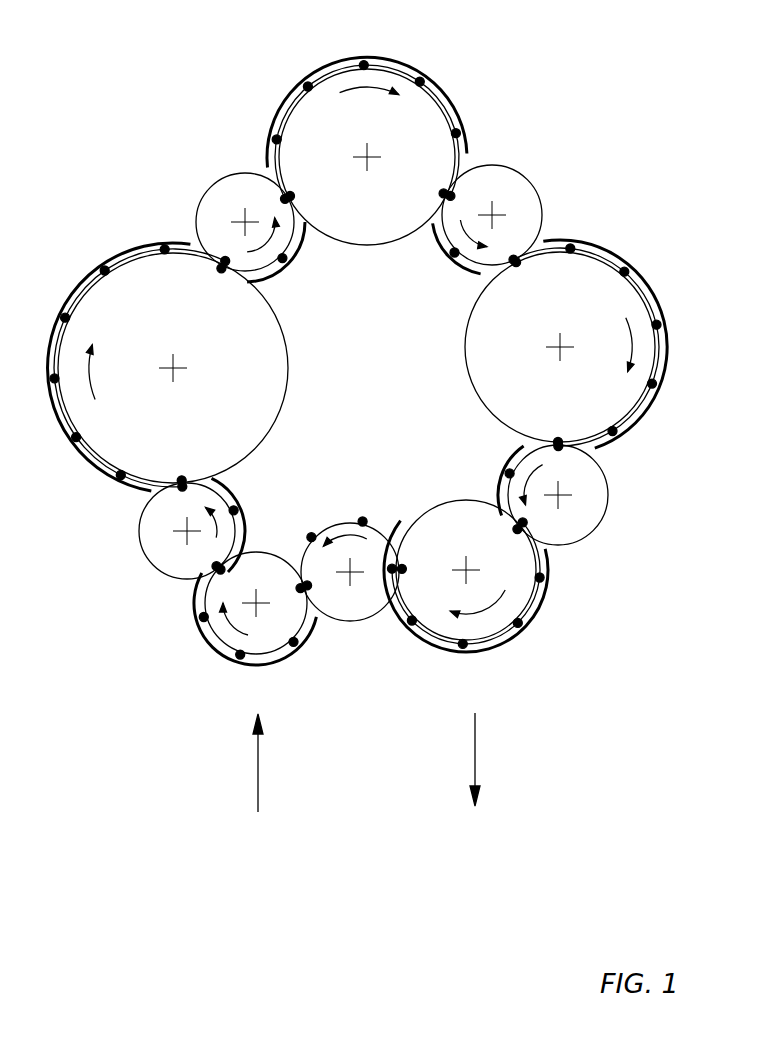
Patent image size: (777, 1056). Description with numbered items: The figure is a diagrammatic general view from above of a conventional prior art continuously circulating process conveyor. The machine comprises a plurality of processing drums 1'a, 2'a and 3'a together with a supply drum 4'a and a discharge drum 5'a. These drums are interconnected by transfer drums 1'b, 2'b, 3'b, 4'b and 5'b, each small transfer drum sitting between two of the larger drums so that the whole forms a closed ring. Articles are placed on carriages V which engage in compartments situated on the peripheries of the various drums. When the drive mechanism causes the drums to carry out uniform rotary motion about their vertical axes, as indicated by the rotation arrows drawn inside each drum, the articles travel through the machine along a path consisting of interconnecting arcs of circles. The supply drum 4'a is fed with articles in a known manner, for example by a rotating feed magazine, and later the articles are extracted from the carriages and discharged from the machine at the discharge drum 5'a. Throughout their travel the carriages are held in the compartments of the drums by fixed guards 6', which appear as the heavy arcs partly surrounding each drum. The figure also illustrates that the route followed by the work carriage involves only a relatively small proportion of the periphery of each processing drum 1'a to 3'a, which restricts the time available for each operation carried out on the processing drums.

The processing drum 1'a is at (169, 368).
The processing drum 2'a is at (366, 153).
The processing drum 3'a is at (563, 347).
The supply drum 4'a is at (255, 605).
The discharge drum 5'a is at (466, 574).
The transfer drum 1'b is at (188, 527).
The transfer drum 2'b is at (245, 223).
The transfer drum 3'b is at (490, 216).
The transfer drum 4'b is at (556, 492).
The transfer drum 5'b is at (351, 569).
The fixed guard 6' is at (352, 345).
The carriage V is at (108, 270).